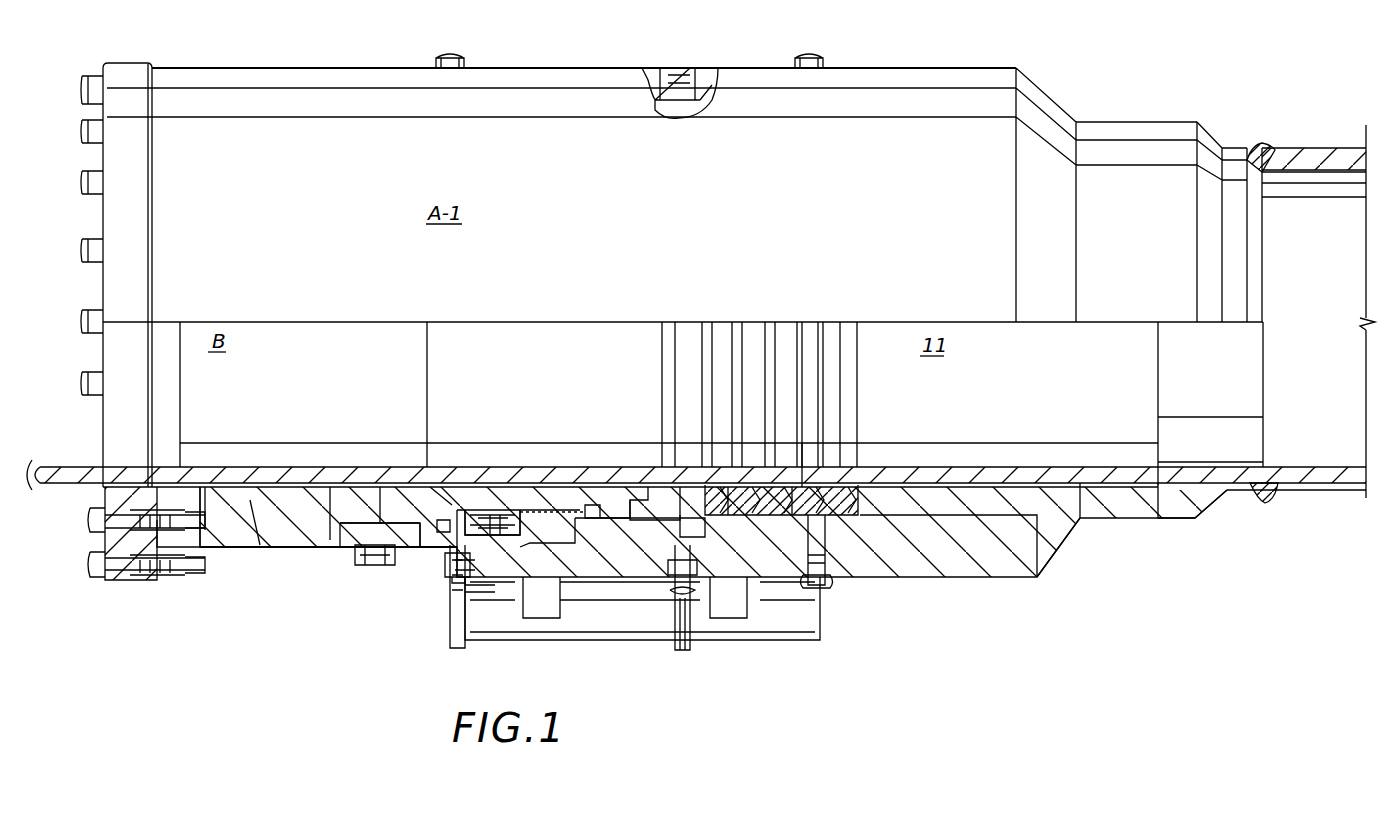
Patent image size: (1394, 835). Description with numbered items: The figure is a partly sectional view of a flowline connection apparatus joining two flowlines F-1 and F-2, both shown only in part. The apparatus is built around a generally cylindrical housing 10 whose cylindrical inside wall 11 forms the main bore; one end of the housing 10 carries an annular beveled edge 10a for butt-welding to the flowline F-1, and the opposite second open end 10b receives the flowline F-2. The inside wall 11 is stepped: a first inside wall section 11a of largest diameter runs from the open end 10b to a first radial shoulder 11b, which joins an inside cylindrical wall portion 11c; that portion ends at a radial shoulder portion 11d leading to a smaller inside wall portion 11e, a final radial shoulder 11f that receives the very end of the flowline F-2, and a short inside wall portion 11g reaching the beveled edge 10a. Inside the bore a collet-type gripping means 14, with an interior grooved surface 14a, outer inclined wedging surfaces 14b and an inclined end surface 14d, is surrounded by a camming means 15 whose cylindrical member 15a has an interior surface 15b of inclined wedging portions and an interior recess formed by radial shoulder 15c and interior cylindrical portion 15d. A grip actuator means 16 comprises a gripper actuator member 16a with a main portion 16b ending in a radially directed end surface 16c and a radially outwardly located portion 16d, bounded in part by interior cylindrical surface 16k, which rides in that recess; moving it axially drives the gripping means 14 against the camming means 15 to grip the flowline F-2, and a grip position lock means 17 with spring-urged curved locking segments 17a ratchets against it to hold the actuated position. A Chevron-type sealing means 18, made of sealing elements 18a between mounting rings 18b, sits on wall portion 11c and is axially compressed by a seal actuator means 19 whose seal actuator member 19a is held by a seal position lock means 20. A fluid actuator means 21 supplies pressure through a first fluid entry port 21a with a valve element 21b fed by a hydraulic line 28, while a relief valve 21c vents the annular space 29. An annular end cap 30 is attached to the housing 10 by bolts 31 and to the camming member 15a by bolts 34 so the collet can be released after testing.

The housing 10 is at (892, 209).
The annular beveled edge 10a is at (1266, 502).
The second open end 10b is at (125, 352).
The inside wall 11 is at (734, 406).
The first inside wall section 11a is at (232, 547).
The first radial shoulder 11b is at (680, 520).
The inside cylindrical wall portion 11c is at (805, 490).
The radial shoulder portion 11d is at (870, 528).
The inside wall portion 11e is at (1080, 482).
The final radial shoulder 11f is at (1156, 478).
The short inside wall portion 11g is at (1225, 470).
The gripping means 14 is at (258, 490).
The interior grooved surface 14a is at (288, 490).
The inclined wedging surfaces 14b is at (250, 520).
The inclined end surface 14d is at (455, 497).
The camming means 15 is at (275, 540).
The cylindrical member 15a is at (185, 540).
The interior surface 15b is at (212, 500).
The radial shoulder 15c is at (330, 495).
The interior cylindrical portion 15d is at (358, 505).
The grip actuator means 16 is at (480, 500).
The gripper actuator member 16a is at (580, 495).
The main portion 16b is at (650, 500).
The radially directed end surface 16c is at (415, 505).
The radially outwardly located portion 16d is at (410, 547).
The interior cylindrical surface 16k is at (392, 500).
The grip position lock means 17 is at (360, 560).
The curved locking segments 17a is at (525, 535).
The sealing means 18 is at (845, 482).
The sealing elements 18a is at (733, 515).
The mounting rings 18b is at (770, 515).
The seal actuator means 19 is at (587, 543).
The seal actuator member 19a is at (618, 500).
The seal position lock means 20 is at (520, 500).
The fluid actuator means 21 is at (480, 568).
The first fluid entry port 21a is at (450, 553).
The valve element 21b is at (465, 585).
The relief valve 21c is at (688, 600).
The hydraulic line 28 is at (452, 615).
The annular space 29 is at (678, 522).
The annular end cap 30 is at (107, 540).
The bolts 31 is at (100, 572).
The bolts 34 is at (100, 522).
The flowline F-1 is at (1306, 160).
The flowline F-2 is at (55, 472).